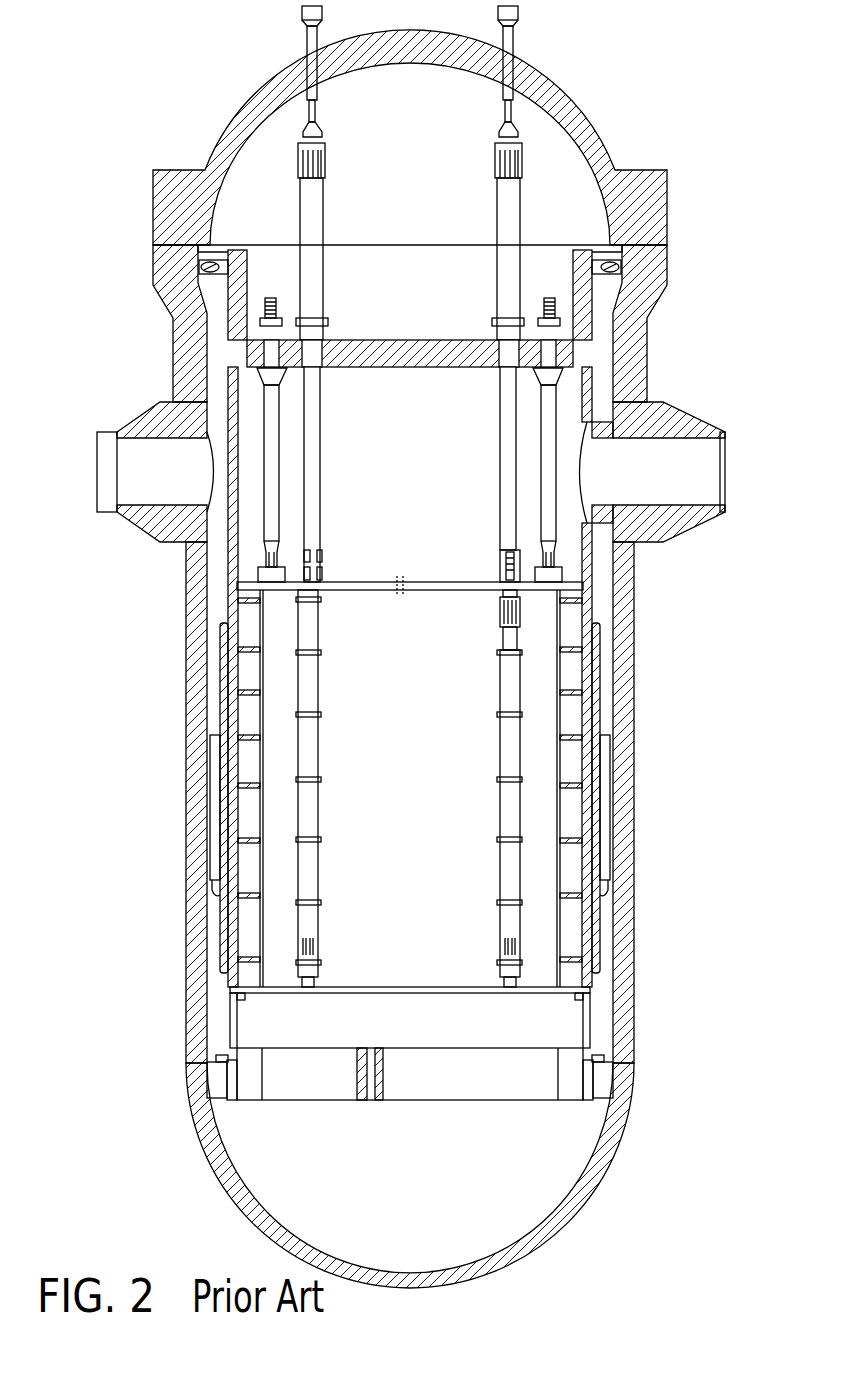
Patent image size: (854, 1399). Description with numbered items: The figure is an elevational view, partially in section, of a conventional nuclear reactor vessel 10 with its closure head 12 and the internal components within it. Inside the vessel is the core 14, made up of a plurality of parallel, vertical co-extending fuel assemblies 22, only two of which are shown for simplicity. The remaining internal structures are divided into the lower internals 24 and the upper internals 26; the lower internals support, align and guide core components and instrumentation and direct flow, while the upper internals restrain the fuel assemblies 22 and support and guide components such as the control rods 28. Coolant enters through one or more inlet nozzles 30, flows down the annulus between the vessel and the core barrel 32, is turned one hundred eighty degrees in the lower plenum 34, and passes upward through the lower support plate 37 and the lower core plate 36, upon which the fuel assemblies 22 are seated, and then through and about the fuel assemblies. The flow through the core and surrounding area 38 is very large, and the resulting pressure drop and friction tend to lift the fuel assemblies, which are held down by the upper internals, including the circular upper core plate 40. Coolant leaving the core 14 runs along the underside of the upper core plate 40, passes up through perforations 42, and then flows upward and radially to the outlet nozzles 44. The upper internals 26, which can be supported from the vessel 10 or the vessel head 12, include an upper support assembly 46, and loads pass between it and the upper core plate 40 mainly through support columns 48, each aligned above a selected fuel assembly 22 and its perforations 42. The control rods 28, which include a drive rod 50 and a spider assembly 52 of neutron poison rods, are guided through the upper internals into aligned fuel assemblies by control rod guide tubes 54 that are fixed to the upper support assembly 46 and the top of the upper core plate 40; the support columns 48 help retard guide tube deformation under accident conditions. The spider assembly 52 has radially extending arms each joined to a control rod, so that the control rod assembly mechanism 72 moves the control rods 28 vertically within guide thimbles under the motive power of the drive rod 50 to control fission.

The reactor vessel 10 is at (635, 685).
The closure head 12 is at (668, 206).
The core 14 is at (430, 780).
The fuel assemblies 22 is at (318, 680).
The lower internals 24 is at (430, 1029).
The upper internals 26 is at (432, 445).
The control rods 28 is at (500, 620).
The inlet nozzles 30 is at (150, 402).
The core barrel 32 is at (228, 582).
The lower plenum 34 is at (580, 1152).
The lower core plate 36 is at (470, 986).
The lower support plate 37 is at (455, 1088).
The surrounding area 38 is at (467, 752).
The upper core plate 40 is at (453, 592).
The perforations 42 is at (397, 578).
The outlet nozzles 44 is at (690, 403).
The upper support assembly 46 is at (585, 245).
The support columns 48 is at (282, 468).
The drive rod 50 is at (500, 553).
The spider assembly 52 is at (500, 580).
The control rod guide tubes 54 is at (320, 413).
The control rod assembly mechanism 72 is at (520, 596).